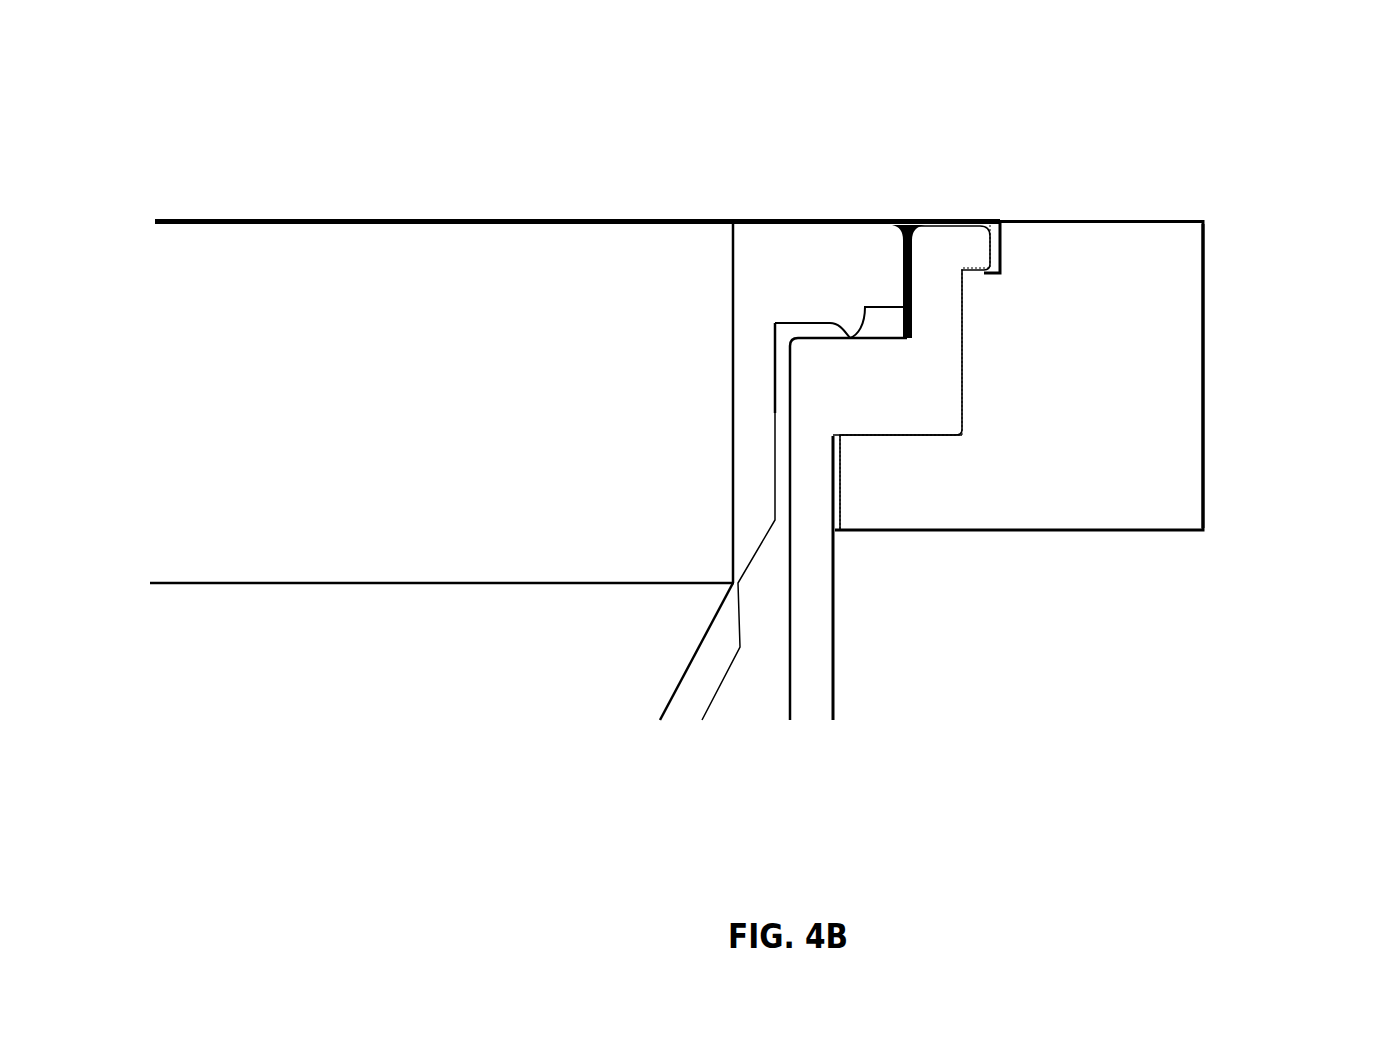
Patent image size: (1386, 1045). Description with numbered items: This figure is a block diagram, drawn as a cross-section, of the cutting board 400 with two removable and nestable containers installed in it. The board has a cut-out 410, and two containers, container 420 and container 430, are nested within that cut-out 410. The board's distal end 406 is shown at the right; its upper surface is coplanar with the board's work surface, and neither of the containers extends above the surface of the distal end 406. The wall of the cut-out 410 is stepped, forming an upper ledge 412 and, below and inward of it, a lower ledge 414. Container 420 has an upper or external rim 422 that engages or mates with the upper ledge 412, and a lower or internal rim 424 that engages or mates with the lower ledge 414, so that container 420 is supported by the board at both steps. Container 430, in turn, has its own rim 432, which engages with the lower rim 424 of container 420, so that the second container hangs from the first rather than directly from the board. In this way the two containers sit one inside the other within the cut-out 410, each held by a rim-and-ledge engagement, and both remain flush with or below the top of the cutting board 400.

The cutting board 400 is at (1001, 771).
The distal end 406 is at (1148, 375).
The cut-out 410 is at (480, 160).
The upper ledge 412 is at (986, 273).
The lower ledge 414 is at (877, 438).
The container 420 is at (823, 702).
The upper rim 422 is at (932, 230).
The lower rim 424 is at (890, 447).
The container 430 is at (575, 471).
The rim 432 is at (853, 281).